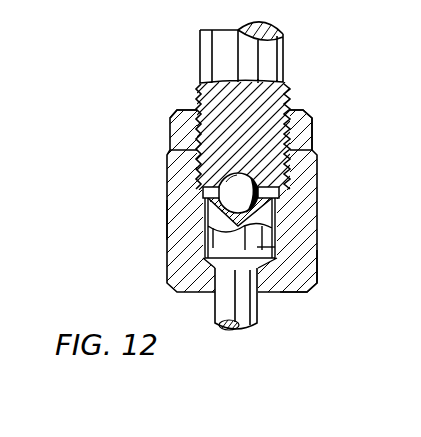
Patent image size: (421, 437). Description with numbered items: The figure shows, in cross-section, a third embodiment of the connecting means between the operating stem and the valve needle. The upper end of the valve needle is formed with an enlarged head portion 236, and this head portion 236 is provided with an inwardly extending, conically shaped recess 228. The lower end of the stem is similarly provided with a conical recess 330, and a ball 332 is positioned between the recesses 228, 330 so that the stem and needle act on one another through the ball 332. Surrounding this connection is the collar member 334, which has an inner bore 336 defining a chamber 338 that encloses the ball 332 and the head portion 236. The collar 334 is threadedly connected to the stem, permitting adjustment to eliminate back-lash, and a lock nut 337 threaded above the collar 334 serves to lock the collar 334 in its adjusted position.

The lock nut 337 is at (308, 130).
The conical recess 330 is at (203, 195).
The chamber 338 is at (188, 218).
The inner bore 336 is at (202, 249).
The ball 332 is at (279, 186).
The conically shaped recess 228 is at (273, 193).
The enlarged head portion 236 is at (277, 247).
The collar member 334 is at (309, 280).